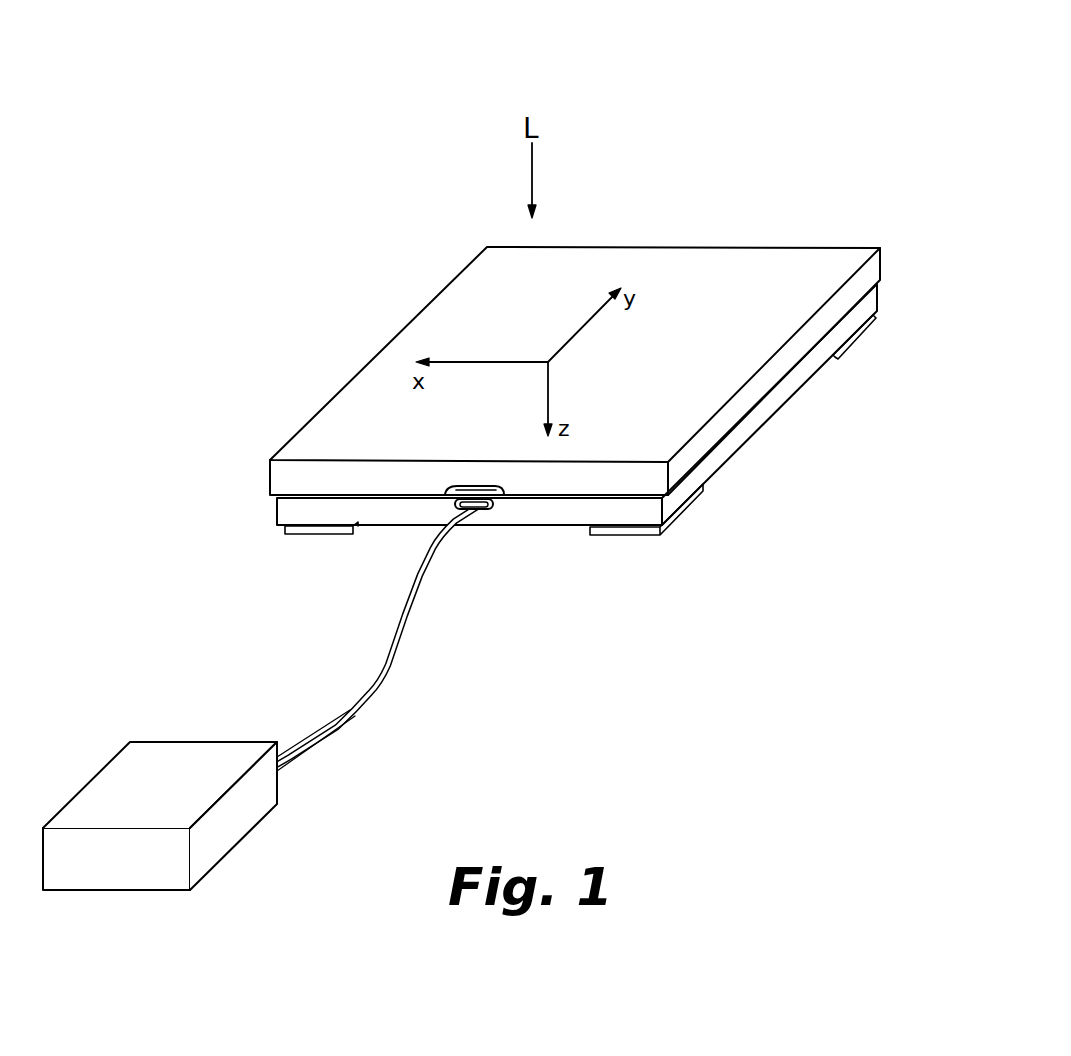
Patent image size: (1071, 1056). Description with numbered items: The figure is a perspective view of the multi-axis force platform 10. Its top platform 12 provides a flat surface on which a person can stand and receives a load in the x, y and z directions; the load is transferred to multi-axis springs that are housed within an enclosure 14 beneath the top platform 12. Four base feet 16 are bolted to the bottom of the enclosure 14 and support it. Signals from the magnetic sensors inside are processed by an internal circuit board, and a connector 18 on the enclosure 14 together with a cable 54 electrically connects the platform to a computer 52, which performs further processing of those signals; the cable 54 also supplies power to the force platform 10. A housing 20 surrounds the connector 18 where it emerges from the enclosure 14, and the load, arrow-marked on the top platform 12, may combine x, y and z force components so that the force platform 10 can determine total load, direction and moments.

The force platform 10 is at (695, 118).
The top platform 12 is at (780, 262).
The enclosure 14 is at (290, 508).
The base feet 16 is at (322, 536).
The connector 18 is at (479, 512).
The connector housing 20 is at (472, 485).
The computer 52 is at (176, 797).
The cable 54 is at (370, 702).